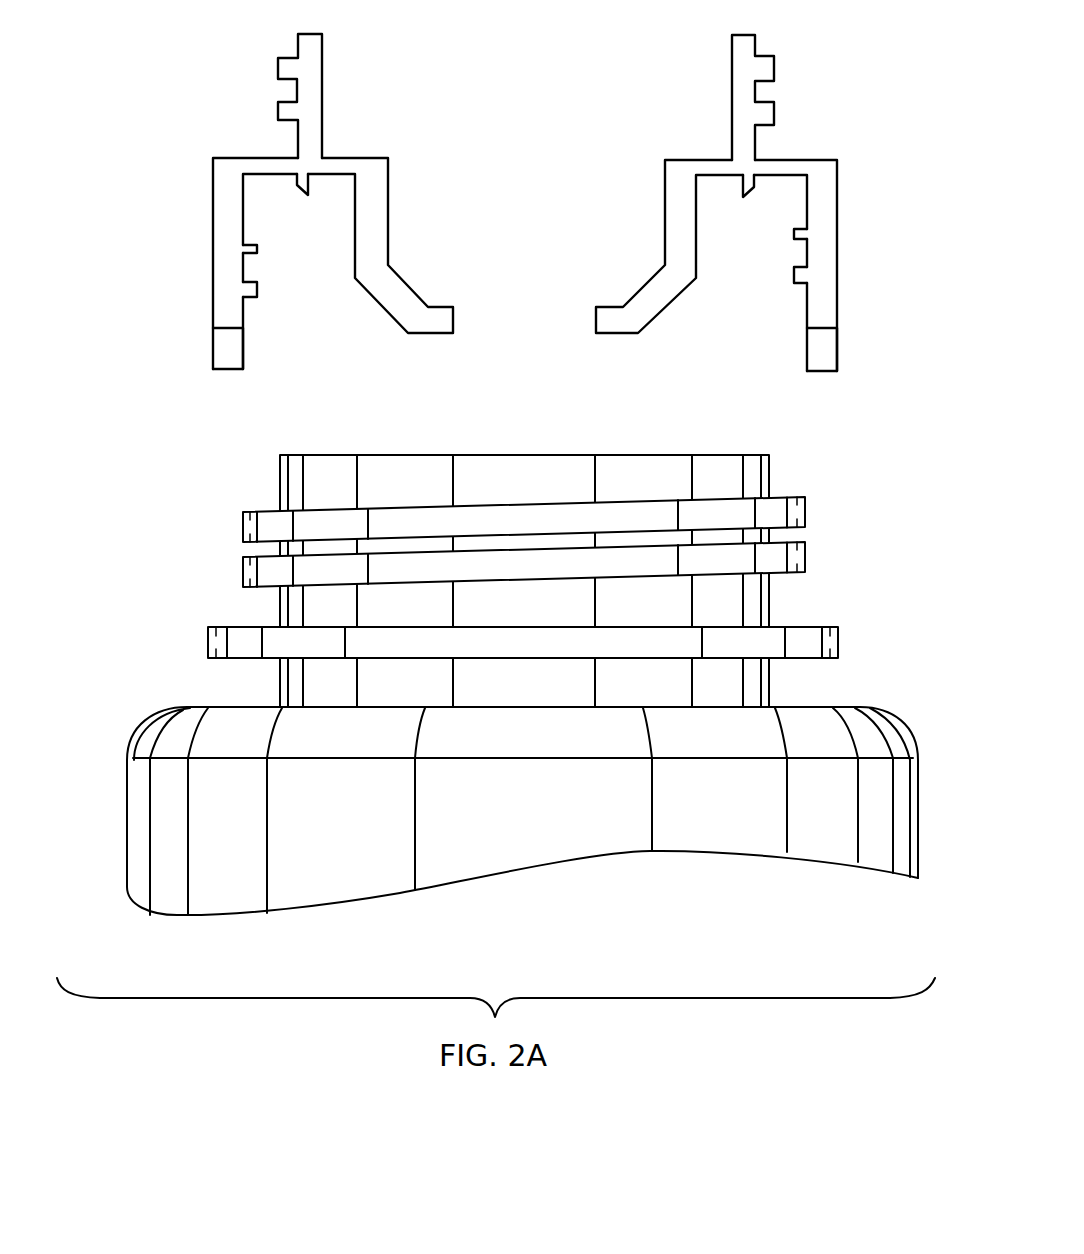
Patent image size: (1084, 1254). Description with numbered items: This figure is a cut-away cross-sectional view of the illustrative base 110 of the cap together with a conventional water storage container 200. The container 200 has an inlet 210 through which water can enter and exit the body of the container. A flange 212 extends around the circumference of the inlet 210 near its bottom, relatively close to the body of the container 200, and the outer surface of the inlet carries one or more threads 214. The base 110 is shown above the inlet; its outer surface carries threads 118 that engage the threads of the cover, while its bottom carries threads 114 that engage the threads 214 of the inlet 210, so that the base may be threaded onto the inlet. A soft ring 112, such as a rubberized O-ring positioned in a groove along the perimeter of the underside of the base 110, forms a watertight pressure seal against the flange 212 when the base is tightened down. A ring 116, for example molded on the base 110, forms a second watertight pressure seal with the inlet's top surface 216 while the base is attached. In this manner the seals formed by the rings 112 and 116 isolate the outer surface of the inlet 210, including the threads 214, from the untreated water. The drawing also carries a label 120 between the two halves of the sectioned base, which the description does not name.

The base 110 is at (192, 193).
The soft ring 112 is at (213, 348).
The threads 114 is at (257, 247).
The ring 116 is at (303, 192).
The threads 118 is at (278, 109).
The gap between clips 120 is at (498, 320).
The water storage container 200 is at (138, 727).
The inlet 210 is at (519, 555).
The flange 212 is at (208, 648).
The threads 214 is at (243, 577).
The top surface 216 is at (544, 455).